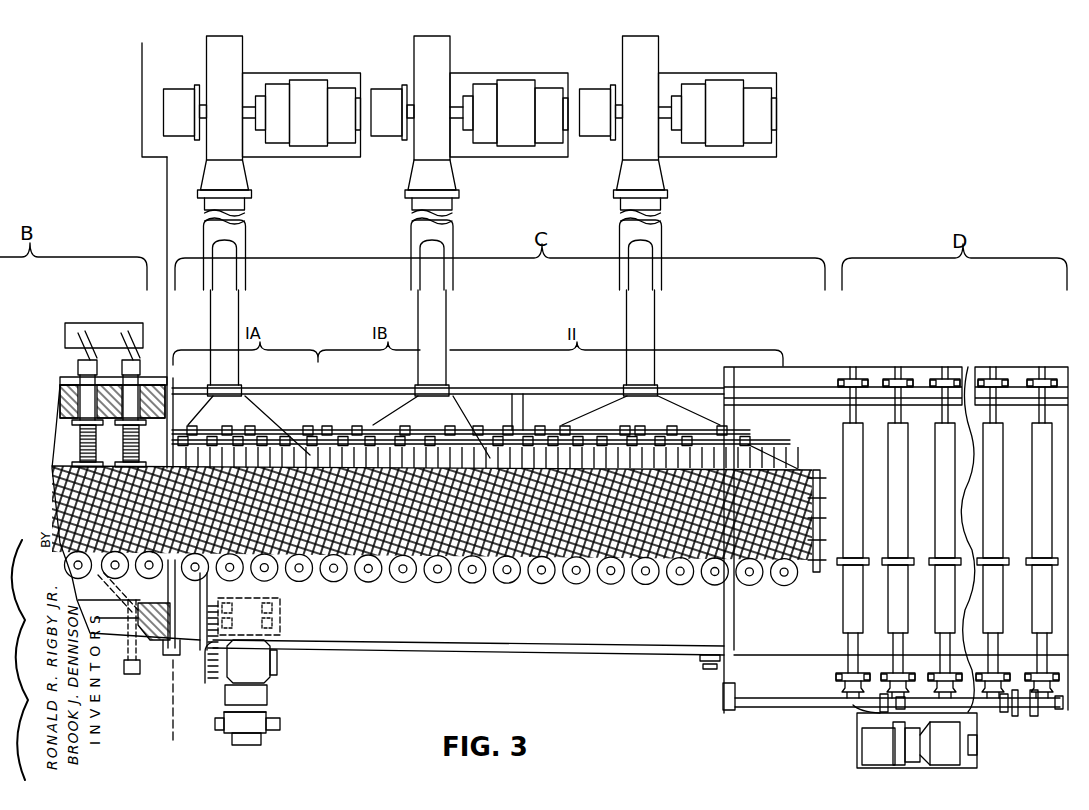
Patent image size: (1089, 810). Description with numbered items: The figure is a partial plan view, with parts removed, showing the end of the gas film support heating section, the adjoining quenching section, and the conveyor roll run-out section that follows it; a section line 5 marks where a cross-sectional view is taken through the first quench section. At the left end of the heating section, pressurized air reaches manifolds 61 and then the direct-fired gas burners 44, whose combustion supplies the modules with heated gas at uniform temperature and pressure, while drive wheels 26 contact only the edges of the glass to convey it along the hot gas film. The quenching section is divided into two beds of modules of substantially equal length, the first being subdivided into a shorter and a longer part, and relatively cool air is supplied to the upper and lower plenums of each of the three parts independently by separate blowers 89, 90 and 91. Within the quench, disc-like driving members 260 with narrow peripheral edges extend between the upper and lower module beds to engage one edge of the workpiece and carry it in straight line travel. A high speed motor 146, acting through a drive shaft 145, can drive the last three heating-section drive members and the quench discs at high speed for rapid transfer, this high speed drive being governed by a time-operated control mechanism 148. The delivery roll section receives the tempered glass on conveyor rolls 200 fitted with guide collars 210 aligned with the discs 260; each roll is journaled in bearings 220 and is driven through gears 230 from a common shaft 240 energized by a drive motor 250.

The section line 5- 5 is at (170, 47).
The blower 89 is at (244, 47).
The blower 90 is at (414, 52).
The blower 91 is at (624, 52).
The manifold 61 is at (93, 324).
The gas burner 44 is at (100, 388).
The drive wheel 26 is at (149, 580).
The disc-like driving member 260 is at (232, 580).
The time-operated control mechanism 148 is at (131, 675).
The drive shaft 145 is at (212, 681).
The motor 146 is at (268, 689).
The bearing 220 is at (898, 378).
The conveyor roll 200 is at (940, 437).
The guide collar 210 is at (937, 560).
The common shaft 240 is at (765, 708).
The gear 230 is at (848, 702).
The drive motor 250 is at (858, 761).